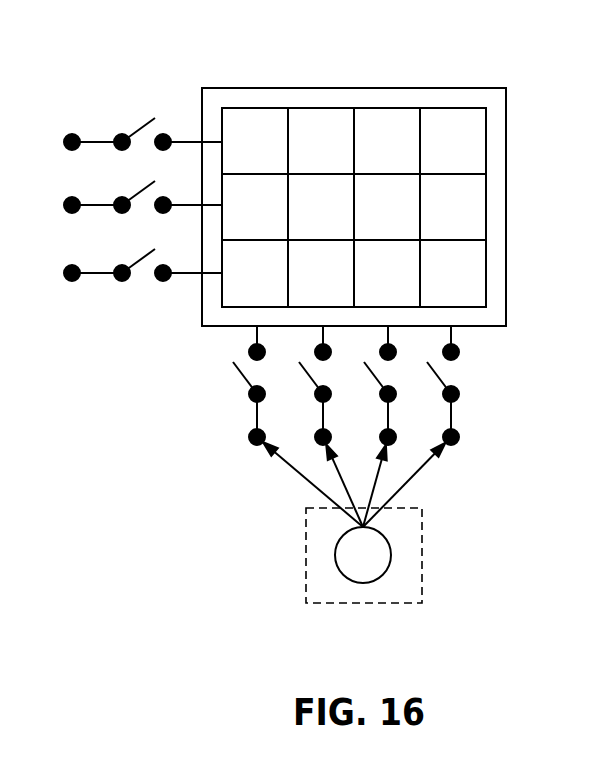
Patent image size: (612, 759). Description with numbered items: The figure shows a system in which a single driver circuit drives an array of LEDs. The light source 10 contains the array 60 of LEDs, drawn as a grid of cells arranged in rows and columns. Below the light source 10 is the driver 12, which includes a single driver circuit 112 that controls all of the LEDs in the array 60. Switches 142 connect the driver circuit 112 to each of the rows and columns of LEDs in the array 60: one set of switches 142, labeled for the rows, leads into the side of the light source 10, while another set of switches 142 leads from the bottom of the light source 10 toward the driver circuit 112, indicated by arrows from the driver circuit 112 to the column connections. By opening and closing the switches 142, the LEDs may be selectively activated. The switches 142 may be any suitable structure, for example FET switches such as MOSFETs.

The light source 10 is at (381, 176).
The array 60 is at (328, 108).
The switches 142 is at (72, 134).
The driver 12 is at (394, 590).
The driver circuit 112 is at (367, 575).